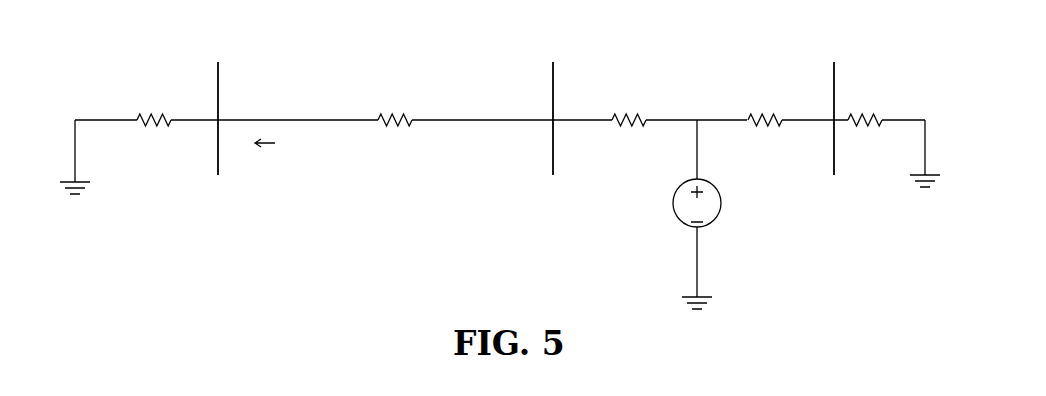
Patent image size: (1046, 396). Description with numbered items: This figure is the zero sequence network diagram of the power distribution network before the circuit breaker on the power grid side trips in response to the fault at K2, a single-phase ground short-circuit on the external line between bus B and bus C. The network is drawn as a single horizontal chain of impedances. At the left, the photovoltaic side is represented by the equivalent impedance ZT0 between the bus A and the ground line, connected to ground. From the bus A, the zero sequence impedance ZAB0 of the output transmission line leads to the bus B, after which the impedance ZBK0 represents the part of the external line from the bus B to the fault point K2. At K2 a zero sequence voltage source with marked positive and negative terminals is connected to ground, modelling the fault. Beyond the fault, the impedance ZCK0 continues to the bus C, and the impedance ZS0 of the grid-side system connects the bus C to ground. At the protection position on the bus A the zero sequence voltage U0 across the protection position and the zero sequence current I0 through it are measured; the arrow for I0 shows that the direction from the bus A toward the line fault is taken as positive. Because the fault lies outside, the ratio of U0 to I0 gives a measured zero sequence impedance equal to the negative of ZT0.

The equivalent impedance between the bus A and the ground line ZT0 is at (154, 103).
The zero sequence impedance of line AB ZAB0 is at (398, 103).
The zero sequence impedance of line section from bus B to fault point K2 ZBK0 is at (631, 103).
The zero sequence impedance of line section from fault point K2 to bus C ZCK0 is at (769, 103).
The zero sequence impedance of the power grid side system ZS0 is at (868, 102).
The bus A is at (217, 100).
The bus B is at (552, 98).
The bus C is at (834, 97).
The fault point K2 is at (697, 190).
The zero sequence current through the photovoltaic side protection position I0 is at (267, 159).
The zero sequence voltage across the photovoltaic side protection position U0 is at (215, 202).